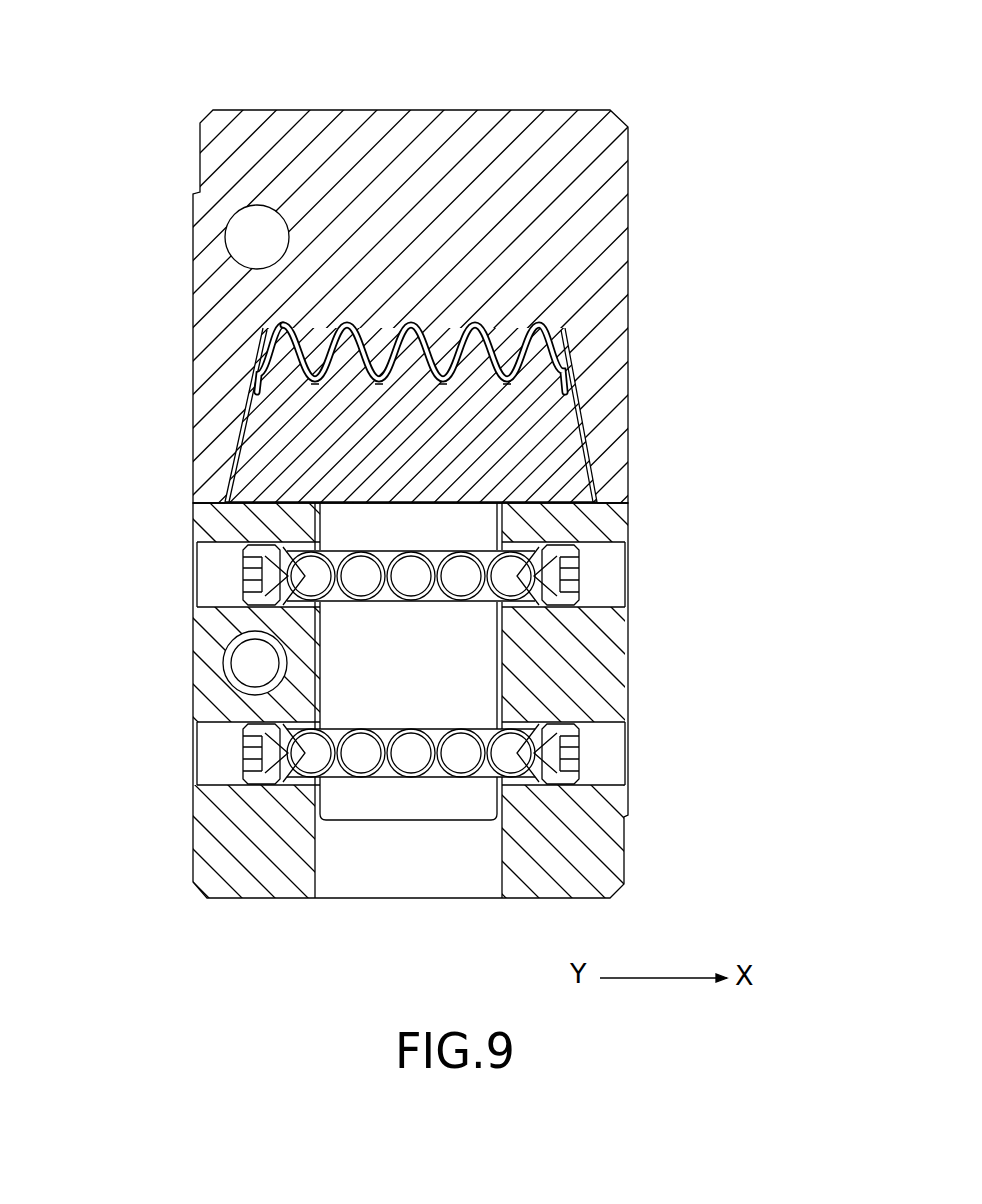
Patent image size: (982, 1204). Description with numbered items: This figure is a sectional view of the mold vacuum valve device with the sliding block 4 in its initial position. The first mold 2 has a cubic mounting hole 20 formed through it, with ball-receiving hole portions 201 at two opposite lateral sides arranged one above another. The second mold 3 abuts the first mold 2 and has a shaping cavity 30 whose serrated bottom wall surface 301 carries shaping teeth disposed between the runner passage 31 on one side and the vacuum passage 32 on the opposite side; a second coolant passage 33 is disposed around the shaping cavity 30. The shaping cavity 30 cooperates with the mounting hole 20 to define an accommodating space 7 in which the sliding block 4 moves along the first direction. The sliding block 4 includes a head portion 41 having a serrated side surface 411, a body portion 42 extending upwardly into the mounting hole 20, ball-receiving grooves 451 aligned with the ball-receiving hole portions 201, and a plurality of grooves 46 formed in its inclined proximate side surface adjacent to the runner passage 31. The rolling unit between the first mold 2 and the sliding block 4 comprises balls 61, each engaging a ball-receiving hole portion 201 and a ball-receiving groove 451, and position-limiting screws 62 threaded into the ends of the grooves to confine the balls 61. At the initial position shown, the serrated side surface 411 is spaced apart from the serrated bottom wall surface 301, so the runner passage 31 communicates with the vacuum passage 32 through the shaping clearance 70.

The first mold 2 is at (240, 856).
The mounting hole 20 is at (418, 838).
The ball-receiving hole portions 201 is at (440, 725).
The second mold 3 is at (613, 258).
The shaping cavity 30 is at (424, 199).
The serrated bottom wall surface 301 is at (473, 318).
The runner passage 31 is at (193, 503).
The vacuum passage 32 is at (598, 495).
The second coolant passage 33 is at (250, 233).
The sliding block 4 is at (573, 447).
The head portion 41 is at (570, 400).
The serrated side surface 411 is at (557, 333).
The body portion 42 is at (343, 800).
The ball-receiving grooves 451 is at (548, 664).
The grooves 46 is at (258, 390).
The balls 61 is at (517, 757).
The position-limiting screws 62 is at (600, 730).
The accommodating space 7 is at (164, 368).
The shaping clearance 70 is at (253, 392).